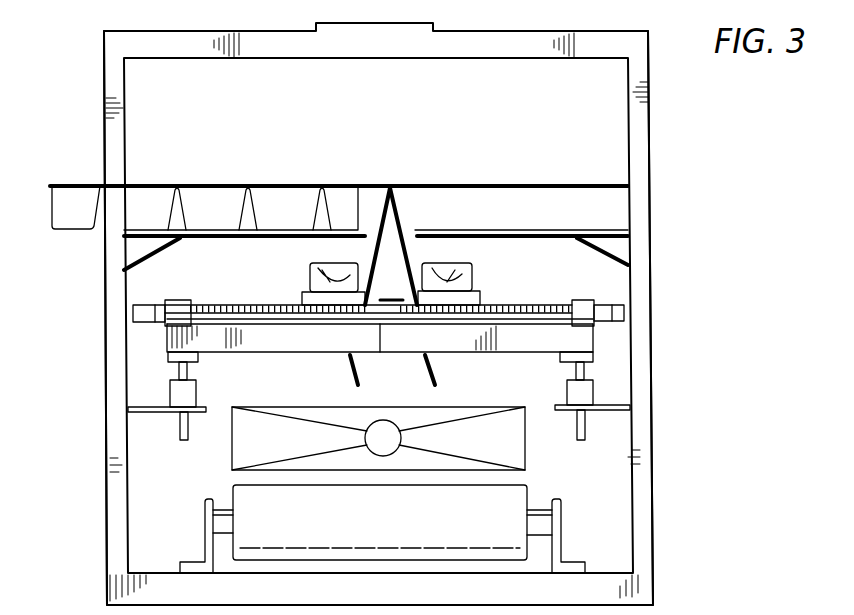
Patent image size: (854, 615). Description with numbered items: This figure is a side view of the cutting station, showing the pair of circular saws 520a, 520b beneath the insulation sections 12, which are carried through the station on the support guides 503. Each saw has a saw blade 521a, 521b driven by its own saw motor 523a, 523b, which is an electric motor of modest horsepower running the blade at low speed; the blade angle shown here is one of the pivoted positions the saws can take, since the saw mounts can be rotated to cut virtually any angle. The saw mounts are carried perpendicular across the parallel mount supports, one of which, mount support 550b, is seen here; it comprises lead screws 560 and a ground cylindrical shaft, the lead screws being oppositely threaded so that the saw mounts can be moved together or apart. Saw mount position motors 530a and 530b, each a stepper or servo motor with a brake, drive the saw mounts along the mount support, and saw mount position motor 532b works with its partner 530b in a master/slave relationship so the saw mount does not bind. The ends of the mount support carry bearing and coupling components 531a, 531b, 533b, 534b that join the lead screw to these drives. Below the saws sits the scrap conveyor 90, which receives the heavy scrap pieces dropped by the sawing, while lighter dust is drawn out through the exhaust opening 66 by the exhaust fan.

The insulation sections 12 is at (68, 200).
The support guides 503 is at (175, 215).
The circular saw 520a is at (483, 270).
The circular saw 520b is at (318, 250).
The saw blade 521a is at (403, 207).
The saw blade 521b is at (385, 215).
The saw motor 523a is at (456, 280).
The saw motor 523b is at (308, 273).
The saw mount position motor 530a is at (617, 332).
The saw mount position motor 530b is at (134, 347).
The right end bearing 531a is at (628, 312).
The left end bearing 531b is at (133, 314).
The saw mount position motor 532b is at (163, 312).
The lead screw 533b is at (162, 300).
The slider block 534b is at (182, 300).
The mount support 550b is at (392, 376).
The lead screws 560 is at (243, 315).
The exhaust opening 66 is at (513, 445).
The scrap conveyor 90 is at (513, 523).